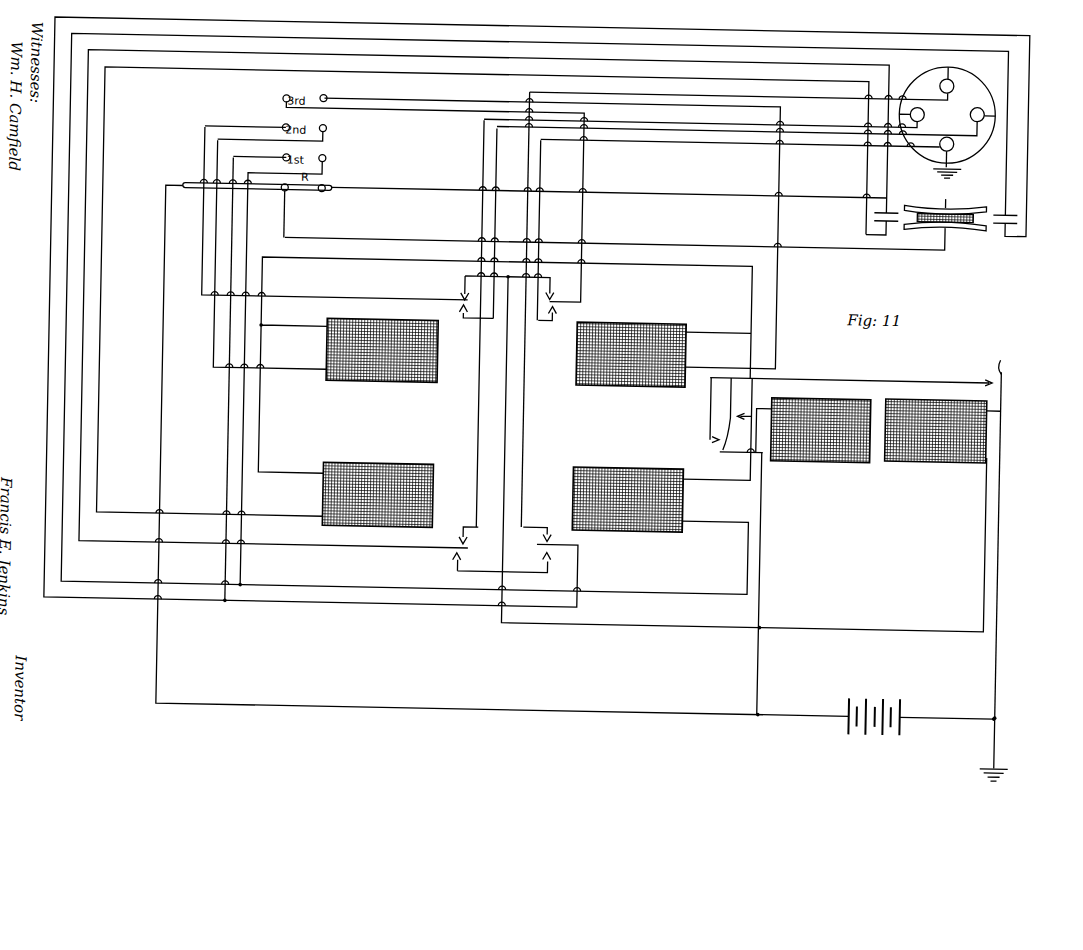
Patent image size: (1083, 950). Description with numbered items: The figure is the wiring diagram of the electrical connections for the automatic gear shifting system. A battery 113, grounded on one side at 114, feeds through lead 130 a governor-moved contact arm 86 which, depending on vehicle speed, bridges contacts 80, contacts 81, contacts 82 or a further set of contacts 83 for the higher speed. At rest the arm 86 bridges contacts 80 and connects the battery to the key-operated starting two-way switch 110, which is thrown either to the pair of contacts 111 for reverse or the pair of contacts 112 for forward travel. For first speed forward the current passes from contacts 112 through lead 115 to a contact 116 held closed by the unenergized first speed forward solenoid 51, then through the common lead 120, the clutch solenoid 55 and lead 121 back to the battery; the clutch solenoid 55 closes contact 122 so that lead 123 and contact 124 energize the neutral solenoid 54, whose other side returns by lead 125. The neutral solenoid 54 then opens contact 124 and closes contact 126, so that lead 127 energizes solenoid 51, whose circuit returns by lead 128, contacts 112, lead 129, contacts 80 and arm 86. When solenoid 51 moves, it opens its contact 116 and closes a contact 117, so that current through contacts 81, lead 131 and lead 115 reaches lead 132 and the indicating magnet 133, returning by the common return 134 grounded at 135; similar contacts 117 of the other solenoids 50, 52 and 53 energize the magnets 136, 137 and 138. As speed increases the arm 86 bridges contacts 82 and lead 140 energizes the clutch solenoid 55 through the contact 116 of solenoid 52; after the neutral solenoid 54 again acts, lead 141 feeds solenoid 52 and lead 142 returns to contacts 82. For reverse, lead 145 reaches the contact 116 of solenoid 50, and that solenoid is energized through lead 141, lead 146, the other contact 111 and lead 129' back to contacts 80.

The solenoid 50 is at (384, 470).
The first speed forward solenoid 51 is at (631, 464).
The solenoid 52 is at (382, 375).
The solenoid 53 is at (637, 375).
The neutral solenoid 54 is at (831, 447).
The clutch solenoid 55 is at (941, 445).
The contacts 80 is at (292, 187).
The contacts 81 is at (291, 150).
The contacts 82 is at (290, 120).
The third switch 83 is at (290, 91).
The contact arm 86 is at (276, 186).
The starting two-way switch 110 is at (959, 215).
The contacts 111 is at (896, 209).
The contacts 112 is at (1010, 211).
The battery 113 is at (884, 719).
The ground 114 is at (1011, 749).
The lead 115 is at (481, 17).
The contact 116 is at (466, 289).
The contacts 117 is at (467, 306).
The common lead 120 is at (514, 386).
The lead 121 is at (1009, 551).
The contact 122 is at (1019, 361).
The lead 123 is at (900, 362).
The contact 124 is at (720, 427).
The lead 125 is at (772, 546).
The contact 126 is at (737, 400).
The lead 127 is at (737, 467).
The lead 128 is at (603, 33).
The lead 129 is at (639, 185).
The lead 129' is at (615, 230).
The lead 130 is at (169, 243).
The lead 131 is at (236, 249).
The lead 132 is at (532, 418).
The indicating magnet 133 is at (953, 66).
The common return 134 is at (965, 148).
The ground 135 is at (958, 163).
The magnet 136 is at (982, 95).
The magnet 137 is at (957, 128).
The magnet 138 is at (927, 98).
The lead 140 is at (238, 123).
The lead 141 is at (336, 255).
The lead 142 is at (220, 346).
The lead 145 is at (544, 49).
The lead 146 is at (646, 66).